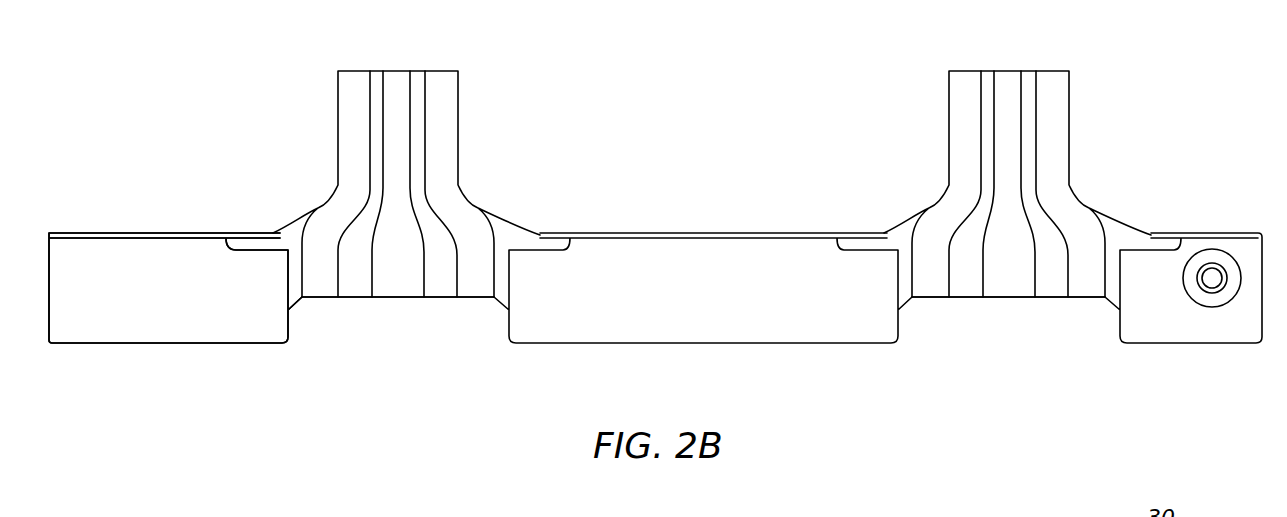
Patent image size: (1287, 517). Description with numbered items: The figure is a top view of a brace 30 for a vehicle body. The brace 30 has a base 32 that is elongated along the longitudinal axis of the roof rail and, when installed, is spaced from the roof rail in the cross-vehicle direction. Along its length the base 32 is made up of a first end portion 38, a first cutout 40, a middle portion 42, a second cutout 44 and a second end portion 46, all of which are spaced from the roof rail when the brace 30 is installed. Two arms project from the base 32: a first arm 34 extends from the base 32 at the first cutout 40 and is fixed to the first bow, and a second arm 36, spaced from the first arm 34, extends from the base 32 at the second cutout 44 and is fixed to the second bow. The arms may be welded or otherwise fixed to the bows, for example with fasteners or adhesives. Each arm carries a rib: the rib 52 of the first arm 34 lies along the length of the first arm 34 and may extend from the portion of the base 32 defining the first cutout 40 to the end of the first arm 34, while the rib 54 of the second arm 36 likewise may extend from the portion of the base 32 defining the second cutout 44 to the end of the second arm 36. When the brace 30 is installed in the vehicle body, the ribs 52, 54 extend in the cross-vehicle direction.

The brace 30 is at (1251, 78).
The base 32 is at (116, 280).
The first arm 34 is at (465, 105).
The second arm 36 is at (1075, 105).
The first end portion 38 is at (152, 350).
The first cutout 40 is at (402, 328).
The middle portion 42 is at (781, 349).
The second cutout 44 is at (951, 329).
The second end portion 46 is at (1198, 349).
The rib 52 is at (398, 88).
The rib 54 is at (1008, 88).